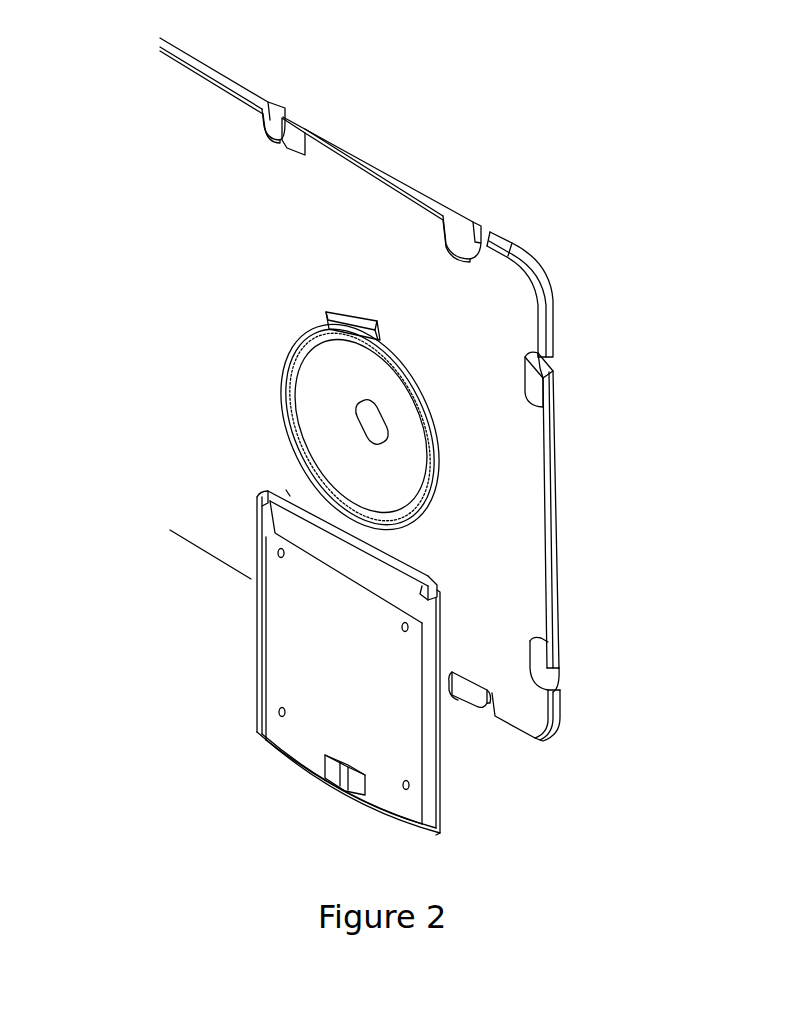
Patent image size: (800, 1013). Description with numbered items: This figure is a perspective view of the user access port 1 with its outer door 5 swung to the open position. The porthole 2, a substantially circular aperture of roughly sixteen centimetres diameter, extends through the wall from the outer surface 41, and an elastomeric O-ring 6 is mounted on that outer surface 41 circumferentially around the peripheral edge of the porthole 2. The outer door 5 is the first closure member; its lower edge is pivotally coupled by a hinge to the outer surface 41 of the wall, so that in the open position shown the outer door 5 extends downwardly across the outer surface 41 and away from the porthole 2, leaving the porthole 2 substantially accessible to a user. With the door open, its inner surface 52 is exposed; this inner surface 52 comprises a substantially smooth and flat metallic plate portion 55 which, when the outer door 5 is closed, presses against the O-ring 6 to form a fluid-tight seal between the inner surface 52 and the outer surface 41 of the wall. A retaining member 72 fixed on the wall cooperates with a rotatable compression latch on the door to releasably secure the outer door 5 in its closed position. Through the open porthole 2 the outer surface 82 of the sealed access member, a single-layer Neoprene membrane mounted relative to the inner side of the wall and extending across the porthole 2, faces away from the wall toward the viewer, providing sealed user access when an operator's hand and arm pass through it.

The user access port 1 is at (222, 210).
The porthole 2 is at (408, 470).
The outer door 5 is at (430, 797).
The elastomeric O-ring 6 is at (437, 435).
The outer surface of the wall 41 is at (512, 295).
The inner surface of the outer door 52 is at (400, 690).
The metallic plate portion 55 is at (290, 657).
The retaining member 72 is at (325, 297).
The outer surface of the sealed access member 82 is at (325, 405).